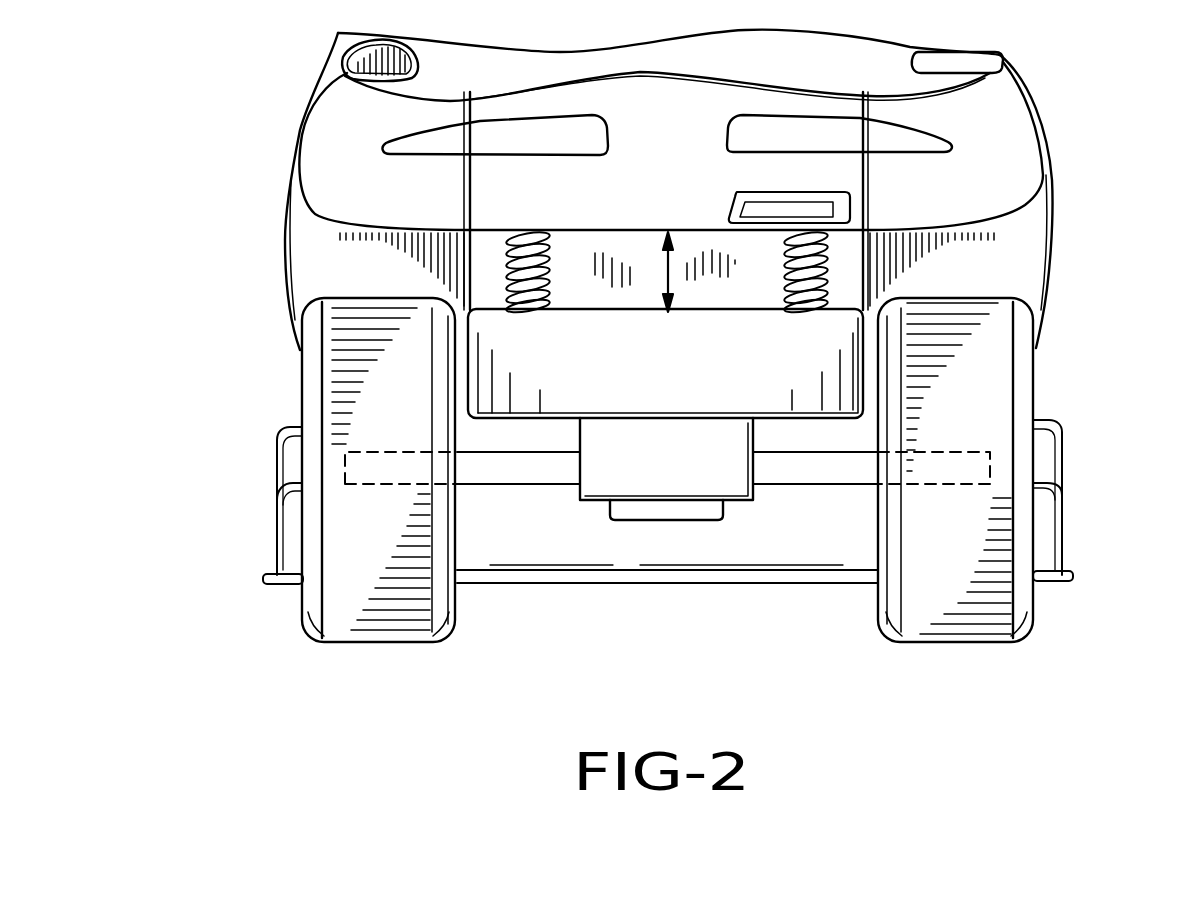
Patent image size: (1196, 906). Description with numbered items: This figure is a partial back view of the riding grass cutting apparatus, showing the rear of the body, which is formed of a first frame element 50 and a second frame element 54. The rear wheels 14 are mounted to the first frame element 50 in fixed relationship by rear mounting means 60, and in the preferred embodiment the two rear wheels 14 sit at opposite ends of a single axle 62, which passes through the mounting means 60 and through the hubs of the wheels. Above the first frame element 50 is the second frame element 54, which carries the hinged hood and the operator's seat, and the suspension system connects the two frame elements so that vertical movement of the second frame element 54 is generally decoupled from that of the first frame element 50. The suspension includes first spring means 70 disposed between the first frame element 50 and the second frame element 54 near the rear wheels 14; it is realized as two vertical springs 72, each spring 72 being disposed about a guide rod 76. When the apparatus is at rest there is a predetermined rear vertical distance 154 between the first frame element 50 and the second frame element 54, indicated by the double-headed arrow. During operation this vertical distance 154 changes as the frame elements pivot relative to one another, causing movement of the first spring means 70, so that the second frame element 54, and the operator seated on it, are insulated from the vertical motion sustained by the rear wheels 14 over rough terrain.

The rear wheels 14 is at (332, 363).
The first frame element 50 is at (760, 398).
The second frame element 54 is at (1000, 122).
The rear mounting means 60 is at (613, 483).
The axle 62 is at (962, 484).
The first spring means 70 is at (790, 240).
The vertical springs 72 is at (548, 250).
The guide rod 76 is at (533, 297).
The rear vertical distance 154 is at (668, 270).